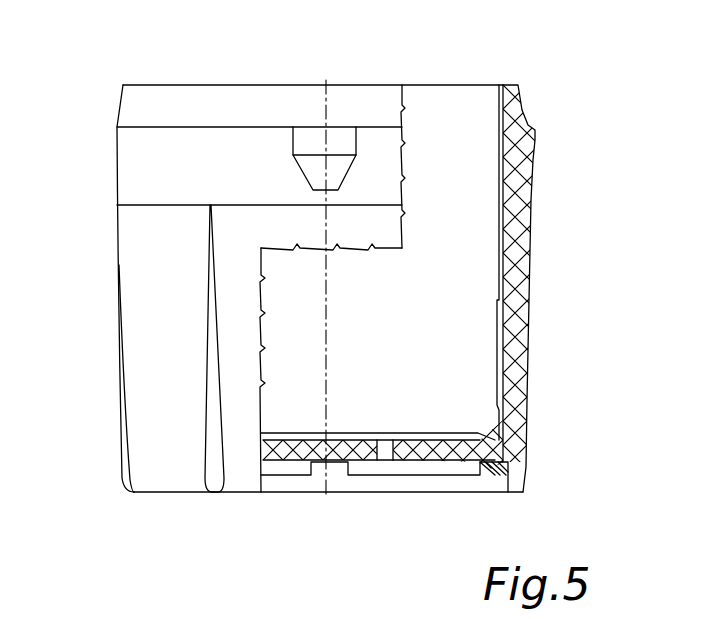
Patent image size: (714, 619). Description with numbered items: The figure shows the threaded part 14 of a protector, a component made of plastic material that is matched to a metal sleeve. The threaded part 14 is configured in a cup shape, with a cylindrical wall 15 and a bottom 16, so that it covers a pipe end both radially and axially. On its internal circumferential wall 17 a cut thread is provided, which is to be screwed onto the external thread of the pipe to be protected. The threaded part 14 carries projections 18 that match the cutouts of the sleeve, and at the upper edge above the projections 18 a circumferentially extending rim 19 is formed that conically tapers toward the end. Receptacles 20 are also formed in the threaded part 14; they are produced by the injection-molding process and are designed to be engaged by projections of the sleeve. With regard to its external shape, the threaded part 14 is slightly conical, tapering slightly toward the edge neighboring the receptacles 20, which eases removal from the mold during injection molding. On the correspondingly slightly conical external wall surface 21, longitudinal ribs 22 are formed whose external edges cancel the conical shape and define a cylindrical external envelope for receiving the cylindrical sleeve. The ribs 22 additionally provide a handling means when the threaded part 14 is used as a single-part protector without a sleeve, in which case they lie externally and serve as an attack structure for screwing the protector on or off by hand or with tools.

The threaded part 14 is at (560, 252).
The cylindrical wall 15 is at (513, 352).
The bottom 16 is at (290, 453).
The internal circumferential wall 17 is at (497, 300).
The projections 18 is at (333, 145).
The rim 19 is at (118, 107).
The receptacles 20 is at (513, 475).
The external wall surface 21 is at (190, 372).
The longitudinal ribs 22 is at (207, 462).